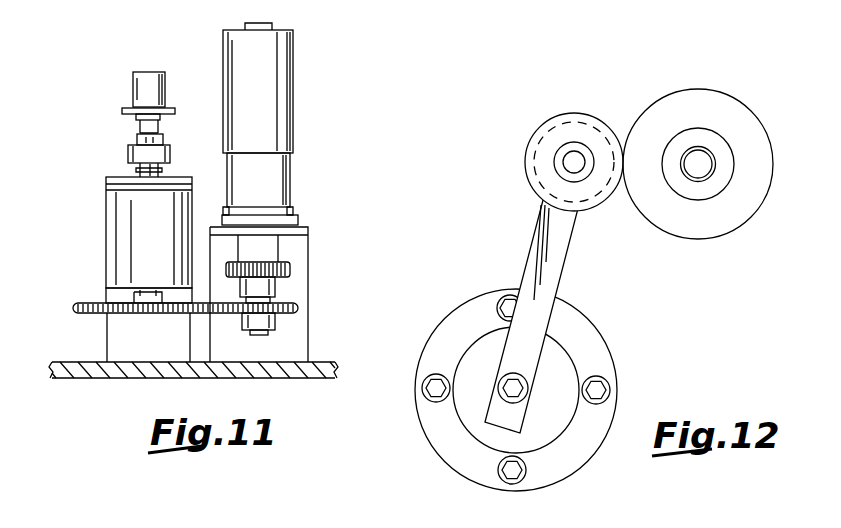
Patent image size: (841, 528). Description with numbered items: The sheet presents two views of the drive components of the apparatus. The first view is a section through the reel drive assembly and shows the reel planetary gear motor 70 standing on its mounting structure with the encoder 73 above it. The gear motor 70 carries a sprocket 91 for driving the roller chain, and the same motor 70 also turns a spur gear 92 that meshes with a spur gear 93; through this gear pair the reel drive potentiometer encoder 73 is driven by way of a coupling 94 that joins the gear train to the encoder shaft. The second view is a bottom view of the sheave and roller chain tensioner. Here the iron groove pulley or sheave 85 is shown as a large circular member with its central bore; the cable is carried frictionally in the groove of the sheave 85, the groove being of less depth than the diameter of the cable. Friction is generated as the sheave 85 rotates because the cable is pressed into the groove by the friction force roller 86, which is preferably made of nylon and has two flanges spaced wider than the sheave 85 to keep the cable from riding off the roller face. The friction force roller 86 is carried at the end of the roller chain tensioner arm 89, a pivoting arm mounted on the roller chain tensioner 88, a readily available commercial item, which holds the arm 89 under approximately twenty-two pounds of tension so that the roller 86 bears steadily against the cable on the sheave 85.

In FIG. 11, the reel planetary gear motor 70 is at (280, 52).
In FIG. 11, the reel drive potentiometer encoder 73 is at (155, 72).
In FIG. 12, the sheave 85 is at (708, 229).
In FIG. 12, the friction force roller 86 is at (588, 211).
In FIG. 12, the roller chain tensioner 88 is at (613, 358).
In FIG. 12, the roller chain tensioner arm 89 is at (532, 359).
In FIG. 11, the sprocket 91 is at (300, 262).
In FIG. 11, the spur gear 92 is at (305, 305).
In FIG. 11, the spur gear 93 is at (72, 305).
In FIG. 11, the coupling 94 is at (130, 150).